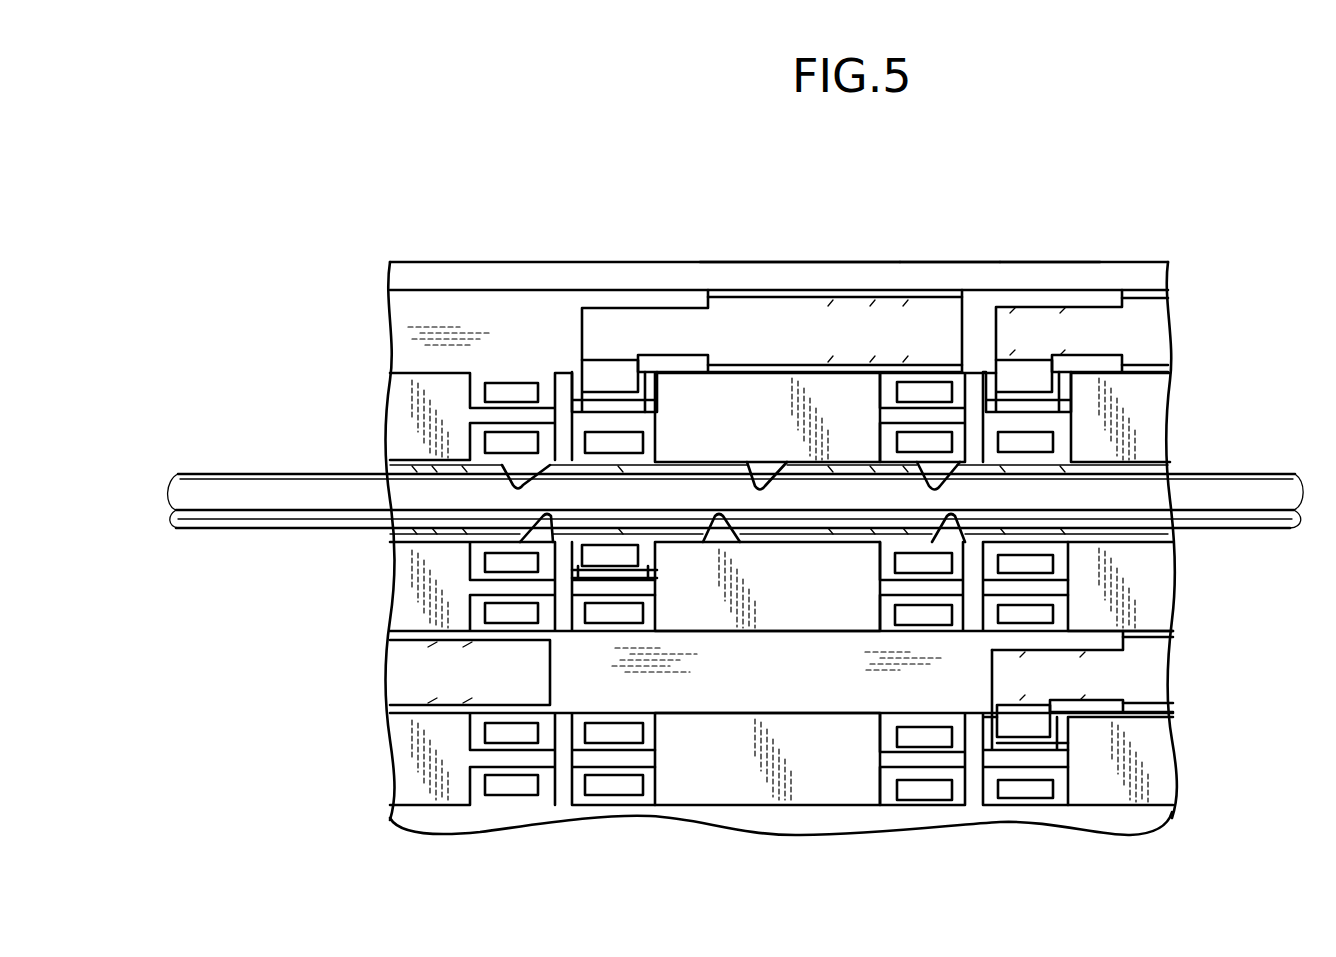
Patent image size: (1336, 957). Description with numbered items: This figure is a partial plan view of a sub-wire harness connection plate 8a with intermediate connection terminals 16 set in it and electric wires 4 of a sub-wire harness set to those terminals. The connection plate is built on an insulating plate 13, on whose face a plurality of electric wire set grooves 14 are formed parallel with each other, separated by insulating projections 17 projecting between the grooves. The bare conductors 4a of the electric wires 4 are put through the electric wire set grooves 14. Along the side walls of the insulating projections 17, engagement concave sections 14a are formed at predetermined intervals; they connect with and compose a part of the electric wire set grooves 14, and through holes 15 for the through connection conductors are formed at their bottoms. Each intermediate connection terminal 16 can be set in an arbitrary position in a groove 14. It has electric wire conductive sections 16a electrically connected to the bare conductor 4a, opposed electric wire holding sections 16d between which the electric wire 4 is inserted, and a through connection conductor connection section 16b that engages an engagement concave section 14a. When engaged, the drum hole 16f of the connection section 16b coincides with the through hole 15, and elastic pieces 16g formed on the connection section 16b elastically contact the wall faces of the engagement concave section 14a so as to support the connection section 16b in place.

The electric wire 4 is at (1258, 487).
The bare conductor 4a is at (1078, 498).
The sub-wire harness connection plate 8a is at (801, 248).
The insulating plate 13 is at (1040, 272).
The electric wire set groove 14 is at (548, 311).
The engagement concave section 14a is at (532, 352).
The through hole 15 is at (500, 382).
The intermediate connection terminal 16 is at (781, 551).
The electric wire conductive section 16a is at (893, 293).
The through connection conductor connection section 16b is at (649, 378).
The electric wire holding section 16d is at (703, 542).
The drum hole 16f is at (621, 392).
The elastic piece 16g is at (607, 382).
The insulating projection 17 is at (838, 383).